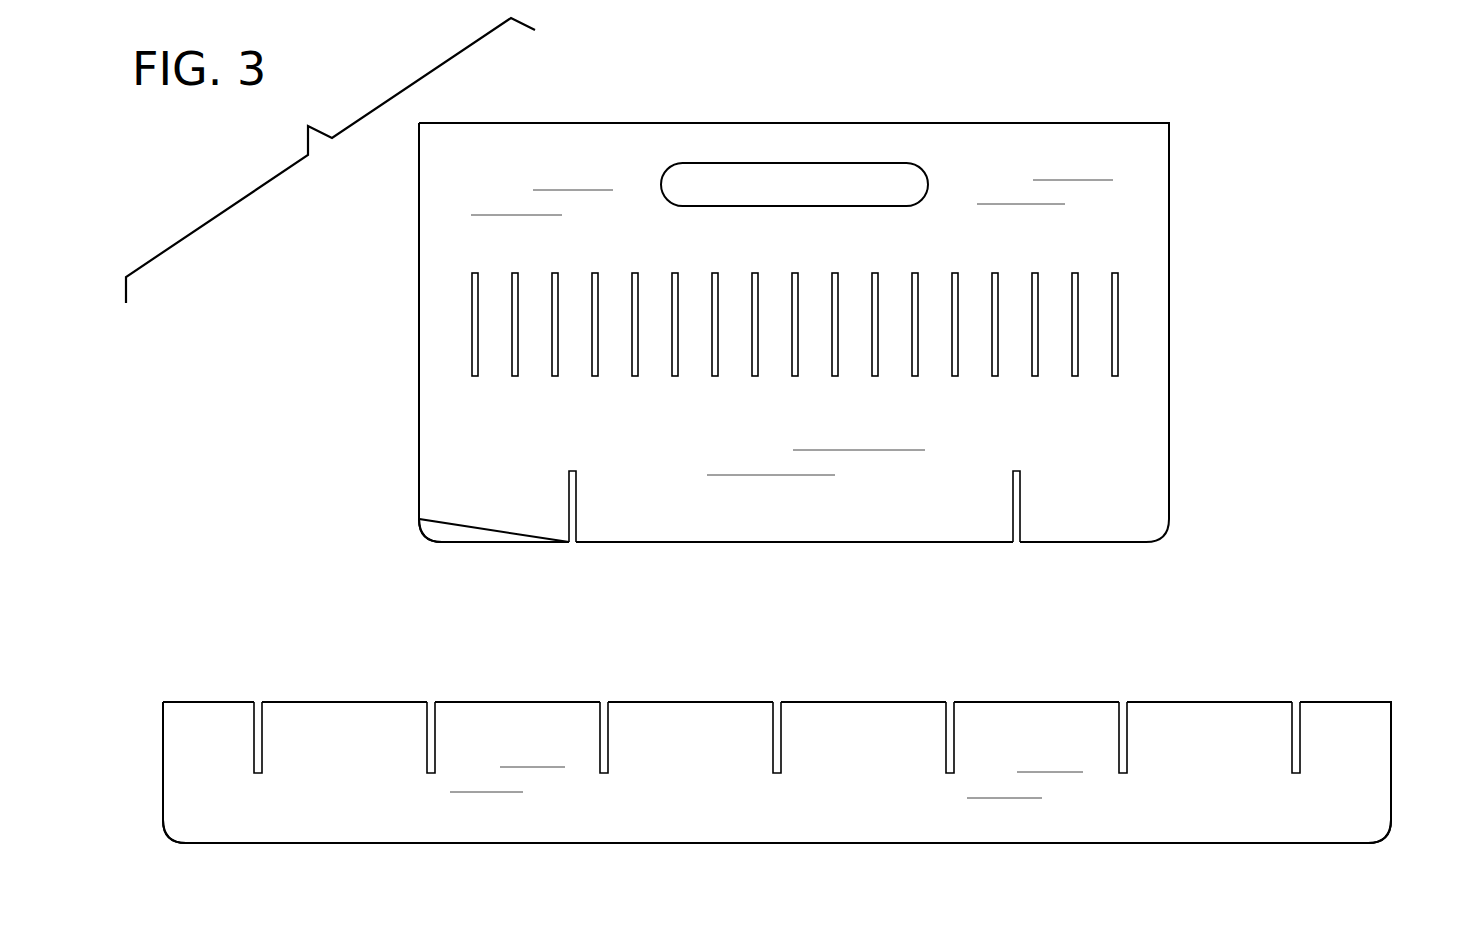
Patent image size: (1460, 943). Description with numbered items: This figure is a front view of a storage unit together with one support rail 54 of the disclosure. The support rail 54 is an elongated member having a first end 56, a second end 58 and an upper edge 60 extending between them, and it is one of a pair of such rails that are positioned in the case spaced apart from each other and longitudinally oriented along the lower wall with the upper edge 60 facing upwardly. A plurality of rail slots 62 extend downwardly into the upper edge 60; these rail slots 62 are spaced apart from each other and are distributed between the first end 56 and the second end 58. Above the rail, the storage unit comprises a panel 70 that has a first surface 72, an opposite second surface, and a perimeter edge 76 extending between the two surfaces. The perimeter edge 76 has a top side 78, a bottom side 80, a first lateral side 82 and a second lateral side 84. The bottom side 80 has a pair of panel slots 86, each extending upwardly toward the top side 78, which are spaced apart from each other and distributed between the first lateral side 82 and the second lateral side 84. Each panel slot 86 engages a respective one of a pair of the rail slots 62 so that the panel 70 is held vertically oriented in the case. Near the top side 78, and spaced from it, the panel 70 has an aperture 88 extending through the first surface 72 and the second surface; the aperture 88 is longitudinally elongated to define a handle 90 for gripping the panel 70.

The support rail 54 is at (376, 843).
The first end 56 is at (163, 760).
The second end 58 is at (1391, 783).
The upper edge 60 is at (1218, 702).
The rail slots 62 is at (784, 680).
The panel 70 is at (1169, 238).
The first surface 72 is at (1075, 150).
The perimeter edge 76 is at (419, 293).
The top side 78 is at (813, 123).
The bottom side 80 is at (731, 542).
The first lateral side 82 is at (419, 385).
The second lateral side 84 is at (1169, 368).
The panel slots 86 is at (573, 560).
The aperture 88 is at (718, 170).
The handle 90 is at (893, 163).